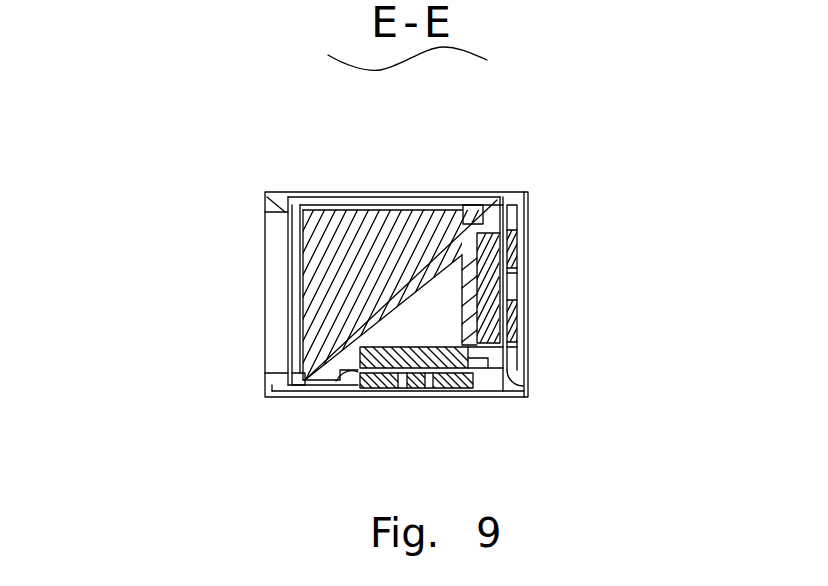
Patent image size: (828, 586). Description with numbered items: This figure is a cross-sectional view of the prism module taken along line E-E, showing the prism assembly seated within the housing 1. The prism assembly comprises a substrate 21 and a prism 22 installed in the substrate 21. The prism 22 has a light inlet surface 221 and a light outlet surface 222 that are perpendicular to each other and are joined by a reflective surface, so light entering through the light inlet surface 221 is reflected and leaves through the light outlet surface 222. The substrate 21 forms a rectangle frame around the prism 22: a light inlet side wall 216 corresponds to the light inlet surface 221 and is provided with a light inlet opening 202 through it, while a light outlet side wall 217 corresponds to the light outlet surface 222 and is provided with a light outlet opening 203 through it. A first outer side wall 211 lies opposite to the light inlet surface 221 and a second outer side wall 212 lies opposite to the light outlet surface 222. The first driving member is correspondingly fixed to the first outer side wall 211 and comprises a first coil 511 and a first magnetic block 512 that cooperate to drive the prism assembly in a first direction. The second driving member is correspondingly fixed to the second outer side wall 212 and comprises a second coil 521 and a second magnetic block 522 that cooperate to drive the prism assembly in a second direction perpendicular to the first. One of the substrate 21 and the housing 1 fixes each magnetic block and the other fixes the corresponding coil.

The housing 1 is at (507, 223).
The substrate 21 is at (472, 243).
The prism 22 is at (391, 240).
The light inlet opening 202 is at (317, 197).
The light outlet opening 203 is at (303, 266).
The first outer side wall 211 is at (350, 372).
The second outer side wall 212 is at (468, 326).
The light inlet side wall 216 is at (478, 218).
The light outlet side wall 217 is at (310, 341).
The light inlet surface 221 is at (363, 210).
The light outlet surface 222 is at (305, 302).
The first coil 511 is at (382, 388).
The first magnetic block 512 is at (412, 367).
The second coil 521 is at (507, 268).
The second magnetic block 522 is at (500, 300).